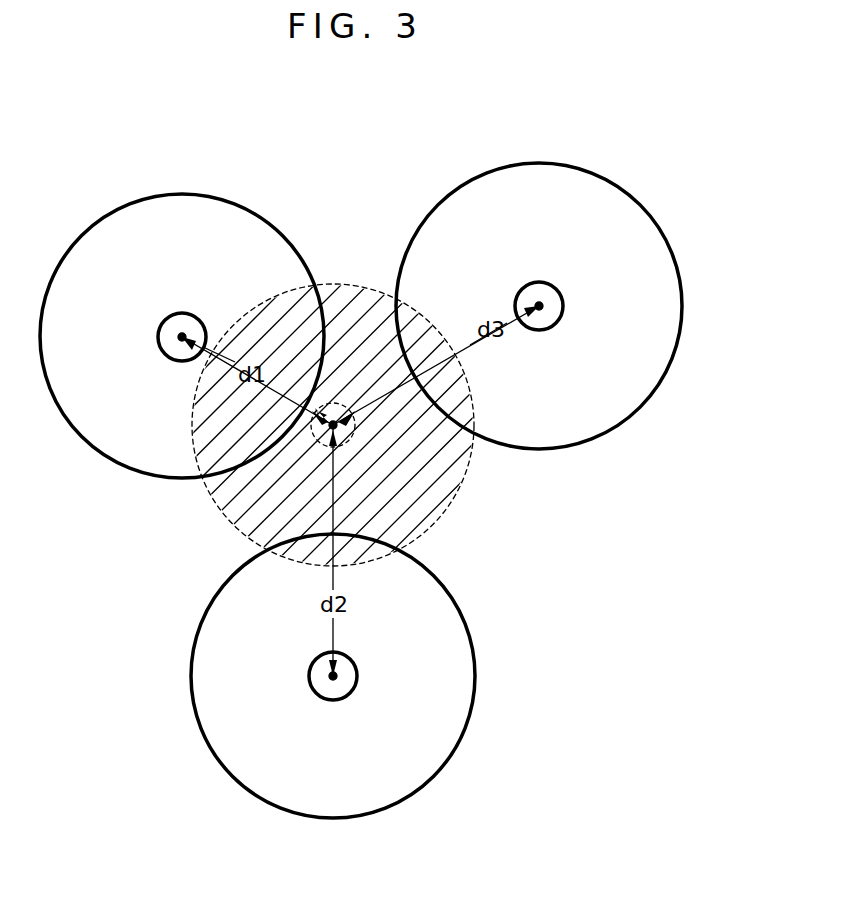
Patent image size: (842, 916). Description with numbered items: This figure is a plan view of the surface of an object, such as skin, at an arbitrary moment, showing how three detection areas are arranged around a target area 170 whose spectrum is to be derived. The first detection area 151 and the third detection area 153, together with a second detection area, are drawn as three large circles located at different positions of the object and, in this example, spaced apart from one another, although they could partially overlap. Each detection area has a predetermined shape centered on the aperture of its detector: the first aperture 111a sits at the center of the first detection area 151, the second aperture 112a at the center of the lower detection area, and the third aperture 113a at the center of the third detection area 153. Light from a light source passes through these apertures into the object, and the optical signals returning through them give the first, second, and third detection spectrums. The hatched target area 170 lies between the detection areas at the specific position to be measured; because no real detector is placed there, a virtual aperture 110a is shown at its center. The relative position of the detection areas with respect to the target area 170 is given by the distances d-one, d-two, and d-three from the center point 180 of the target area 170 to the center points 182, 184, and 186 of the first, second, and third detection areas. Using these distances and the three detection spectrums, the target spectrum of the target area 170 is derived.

The first detection area 151 is at (189, 193).
The third detection area 153 is at (556, 163).
The target area 170 is at (437, 496).
The center point of the target area 180 is at (342, 434).
The virtual aperture 110a is at (345, 403).
The center point of the first detection area 182 is at (183, 330).
The first aperture 111a is at (177, 312).
The center point of the third detection area 186 is at (545, 305).
The third aperture 113a is at (539, 282).
The center point of the second detection area 184 is at (338, 677).
The second aperture 112a is at (331, 700).